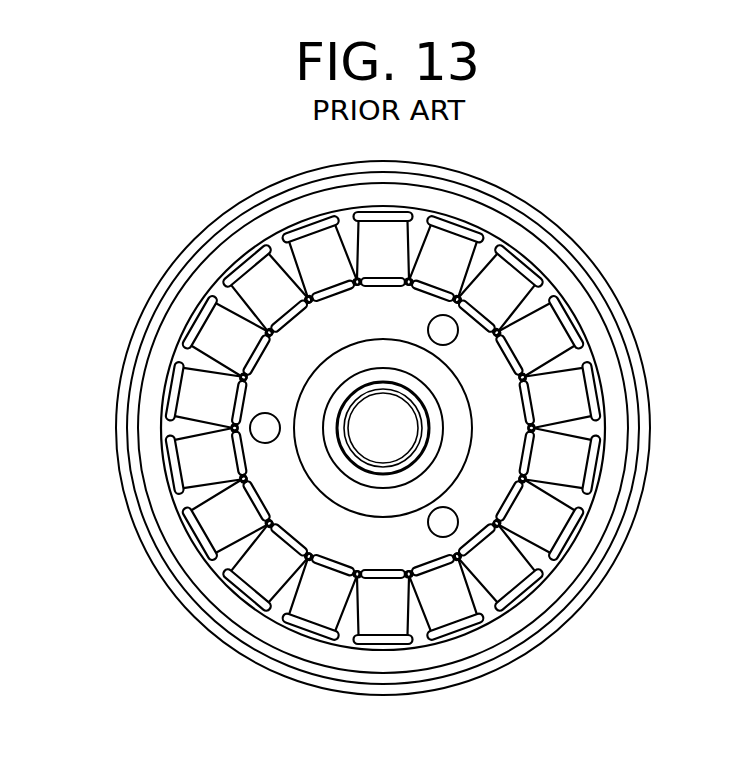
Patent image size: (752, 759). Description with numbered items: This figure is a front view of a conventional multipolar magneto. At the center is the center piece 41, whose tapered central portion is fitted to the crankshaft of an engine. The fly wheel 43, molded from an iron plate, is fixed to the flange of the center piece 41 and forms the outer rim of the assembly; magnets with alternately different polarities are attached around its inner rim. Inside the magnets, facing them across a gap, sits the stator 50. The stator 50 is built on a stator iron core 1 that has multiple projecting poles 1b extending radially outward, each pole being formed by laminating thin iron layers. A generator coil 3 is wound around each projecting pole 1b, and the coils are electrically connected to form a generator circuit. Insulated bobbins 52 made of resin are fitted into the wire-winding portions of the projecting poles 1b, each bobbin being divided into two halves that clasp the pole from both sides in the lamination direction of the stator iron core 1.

The stator iron core 1 is at (420, 540).
The projecting pole 1b is at (188, 523).
The generator coil 3 is at (240, 562).
The center piece 41 is at (350, 388).
The fly wheel 43 is at (130, 341).
The stator 50 is at (337, 537).
The insulated bobbin 52 is at (283, 532).